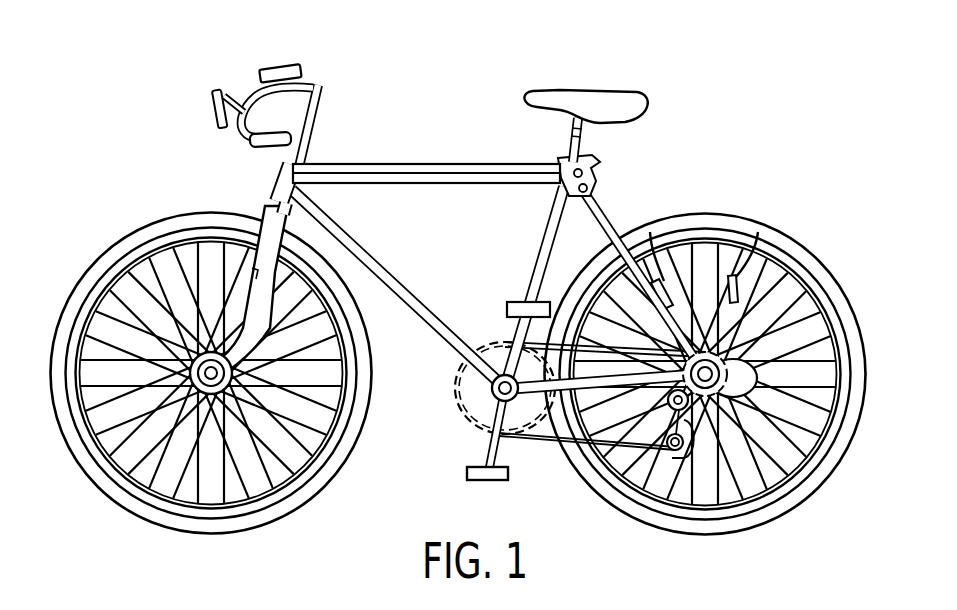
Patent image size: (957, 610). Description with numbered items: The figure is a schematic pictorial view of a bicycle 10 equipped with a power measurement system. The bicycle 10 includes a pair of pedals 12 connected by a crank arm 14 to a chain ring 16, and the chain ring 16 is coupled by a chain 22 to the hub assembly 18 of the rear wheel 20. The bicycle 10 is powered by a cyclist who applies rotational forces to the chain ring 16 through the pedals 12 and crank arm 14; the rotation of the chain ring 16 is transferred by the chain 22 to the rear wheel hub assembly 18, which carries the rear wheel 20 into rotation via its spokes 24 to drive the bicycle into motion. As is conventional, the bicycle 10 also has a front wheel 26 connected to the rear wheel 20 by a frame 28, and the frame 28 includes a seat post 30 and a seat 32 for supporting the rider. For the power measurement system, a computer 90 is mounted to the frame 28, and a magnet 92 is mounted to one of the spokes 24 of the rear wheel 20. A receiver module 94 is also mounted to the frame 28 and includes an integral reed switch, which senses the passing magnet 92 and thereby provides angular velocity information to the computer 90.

The bicycle 10 is at (713, 122).
The pedals 12 is at (472, 483).
The crank arm 14 is at (487, 438).
The chain ring 16 is at (455, 404).
The hub assembly 18 is at (732, 345).
The rear wheel 20 is at (713, 212).
The chain 22 is at (545, 448).
The spokes 24 is at (800, 463).
The front wheel 26 is at (138, 508).
The frame 28 is at (389, 160).
The seat post 30 is at (585, 145).
The seat 32 is at (610, 92).
The computer 90 is at (282, 67).
The magnet 92 is at (757, 246).
The receiver module 94 is at (650, 233).